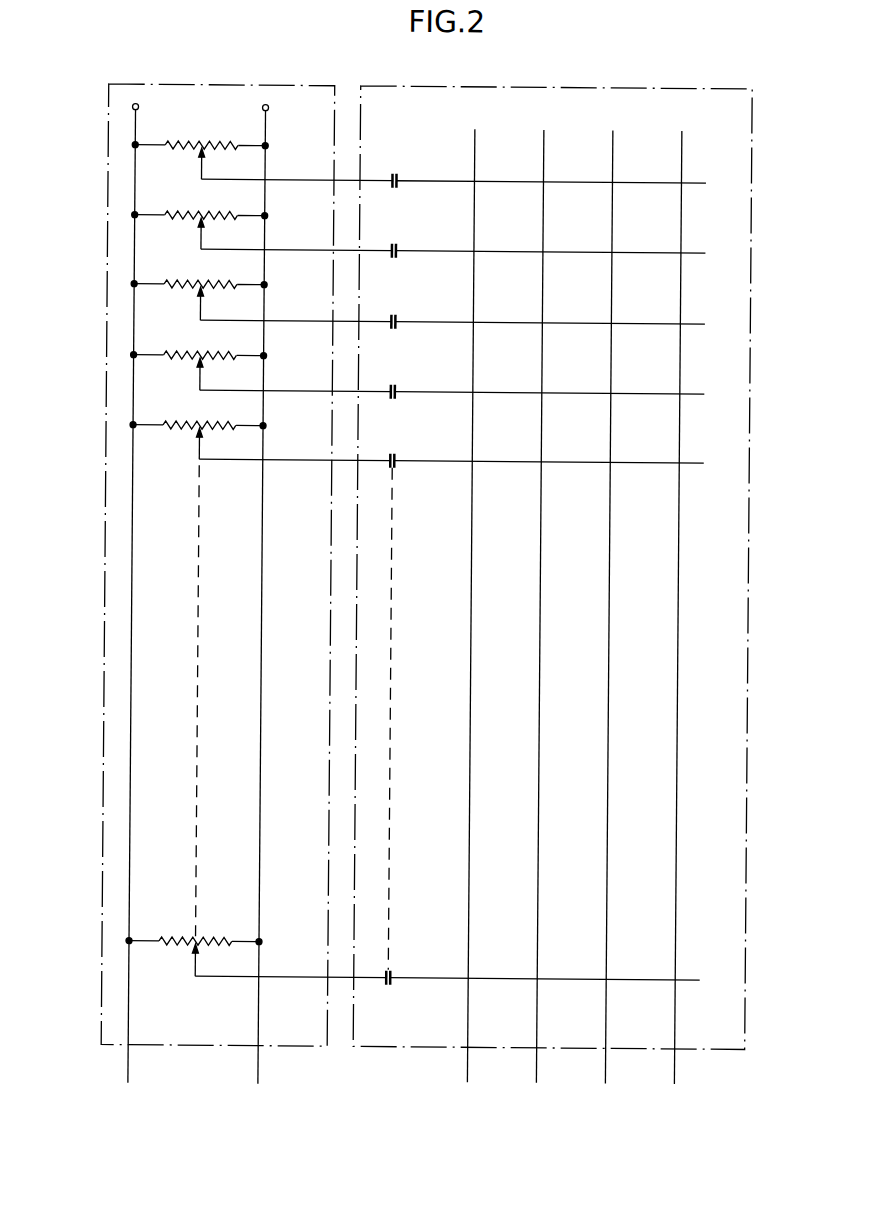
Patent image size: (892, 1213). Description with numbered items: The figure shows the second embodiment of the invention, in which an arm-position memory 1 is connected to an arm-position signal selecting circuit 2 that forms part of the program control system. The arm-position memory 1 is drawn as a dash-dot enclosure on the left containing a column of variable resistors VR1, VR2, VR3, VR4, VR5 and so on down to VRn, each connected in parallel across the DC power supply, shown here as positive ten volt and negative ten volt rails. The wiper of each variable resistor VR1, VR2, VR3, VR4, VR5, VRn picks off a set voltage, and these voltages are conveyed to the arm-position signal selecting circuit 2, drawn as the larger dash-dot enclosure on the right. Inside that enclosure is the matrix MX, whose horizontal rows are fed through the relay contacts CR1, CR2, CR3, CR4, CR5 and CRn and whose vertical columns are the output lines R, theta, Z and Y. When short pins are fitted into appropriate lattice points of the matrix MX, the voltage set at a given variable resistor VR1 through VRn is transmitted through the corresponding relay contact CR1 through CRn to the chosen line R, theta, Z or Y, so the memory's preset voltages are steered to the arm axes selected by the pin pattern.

The arm-position memory 1 is at (120, 995).
The arm-position signal selecting circuit 2 is at (726, 1005).
The matrix MX is at (632, 624).
The variable resistor VR1 is at (262, 147).
The variable resistor VR2 is at (261, 217).
The variable resistor VR3 is at (261, 288).
The variable resistor VR4 is at (260, 357).
The variable resistor VR5 is at (260, 426).
The variable resistor VRn is at (256, 943).
The relay contact CR1 is at (549, 169).
The relay contact CR2 is at (549, 239).
The relay contact CR3 is at (548, 309).
The relay contact CR4 is at (548, 379).
The relay contact CR5 is at (547, 449).
The relay contact CRn is at (543, 965).
The line R is at (470, 623).
The line Z is at (609, 623).
The line Y is at (677, 624).